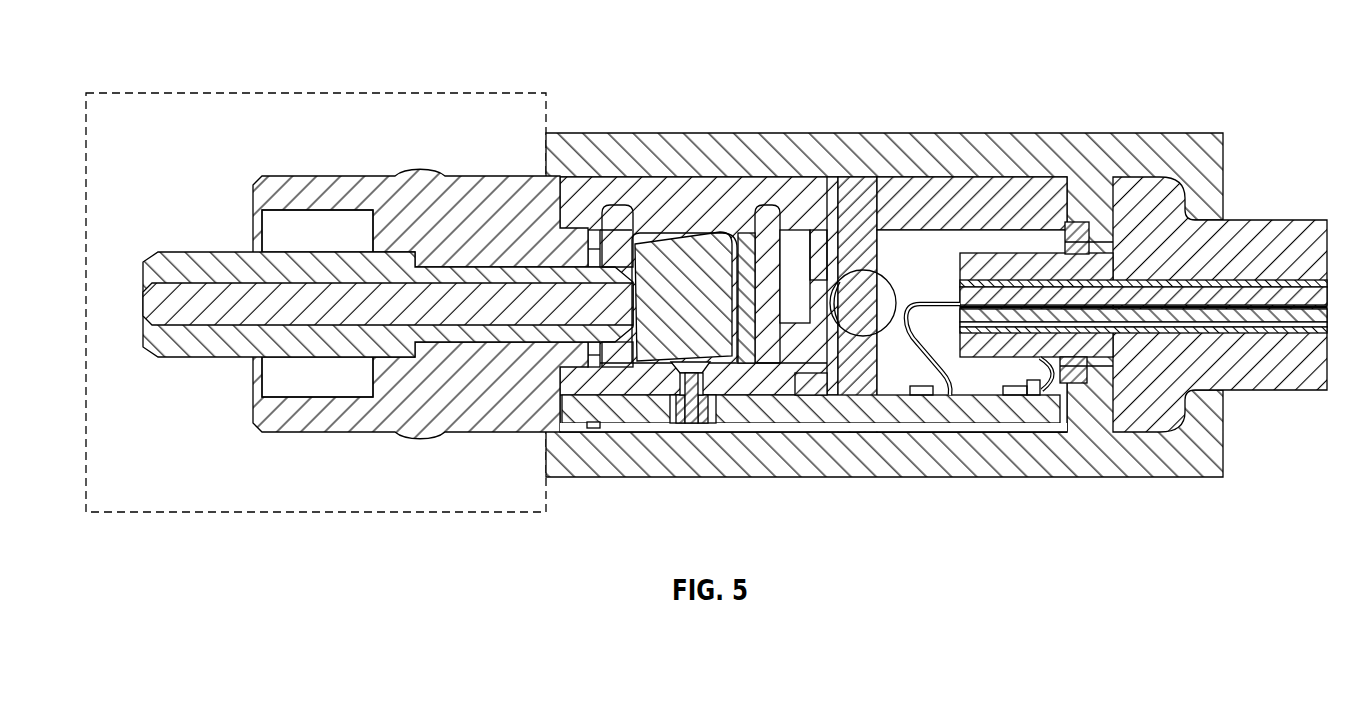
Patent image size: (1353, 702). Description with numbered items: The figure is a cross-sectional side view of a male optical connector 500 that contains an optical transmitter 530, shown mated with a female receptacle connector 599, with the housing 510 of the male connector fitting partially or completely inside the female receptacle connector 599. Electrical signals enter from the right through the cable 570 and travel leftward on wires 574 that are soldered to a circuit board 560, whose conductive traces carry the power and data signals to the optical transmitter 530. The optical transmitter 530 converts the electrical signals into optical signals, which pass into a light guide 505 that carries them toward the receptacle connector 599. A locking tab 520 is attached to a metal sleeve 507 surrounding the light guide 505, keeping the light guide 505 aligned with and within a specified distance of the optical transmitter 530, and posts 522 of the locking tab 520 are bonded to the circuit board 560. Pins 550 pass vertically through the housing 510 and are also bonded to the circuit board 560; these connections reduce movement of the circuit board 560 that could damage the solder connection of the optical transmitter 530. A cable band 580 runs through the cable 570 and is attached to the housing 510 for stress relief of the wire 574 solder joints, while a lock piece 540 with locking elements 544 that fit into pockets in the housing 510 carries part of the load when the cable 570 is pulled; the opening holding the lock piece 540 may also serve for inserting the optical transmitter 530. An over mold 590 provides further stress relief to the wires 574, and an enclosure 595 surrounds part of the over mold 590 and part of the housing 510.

The male optical connector 500 is at (1176, 36).
The female receptacle connector 599 is at (172, 112).
The housing 510 is at (343, 187).
The metal sleeve 507 is at (212, 255).
The light guide 505 is at (240, 320).
The locking tab 520 is at (598, 230).
The posts 522 is at (580, 425).
The optical transmitter 530 is at (673, 253).
The lock piece 540 is at (713, 202).
The locking elements 544 is at (820, 200).
The pins 550 is at (813, 387).
The circuit board 560 is at (740, 410).
The cable 570 is at (1247, 300).
The wires 574 is at (953, 390).
The cable band 580 is at (1080, 307).
The over mold 590 is at (1137, 387).
The enclosure 595 is at (1190, 468).